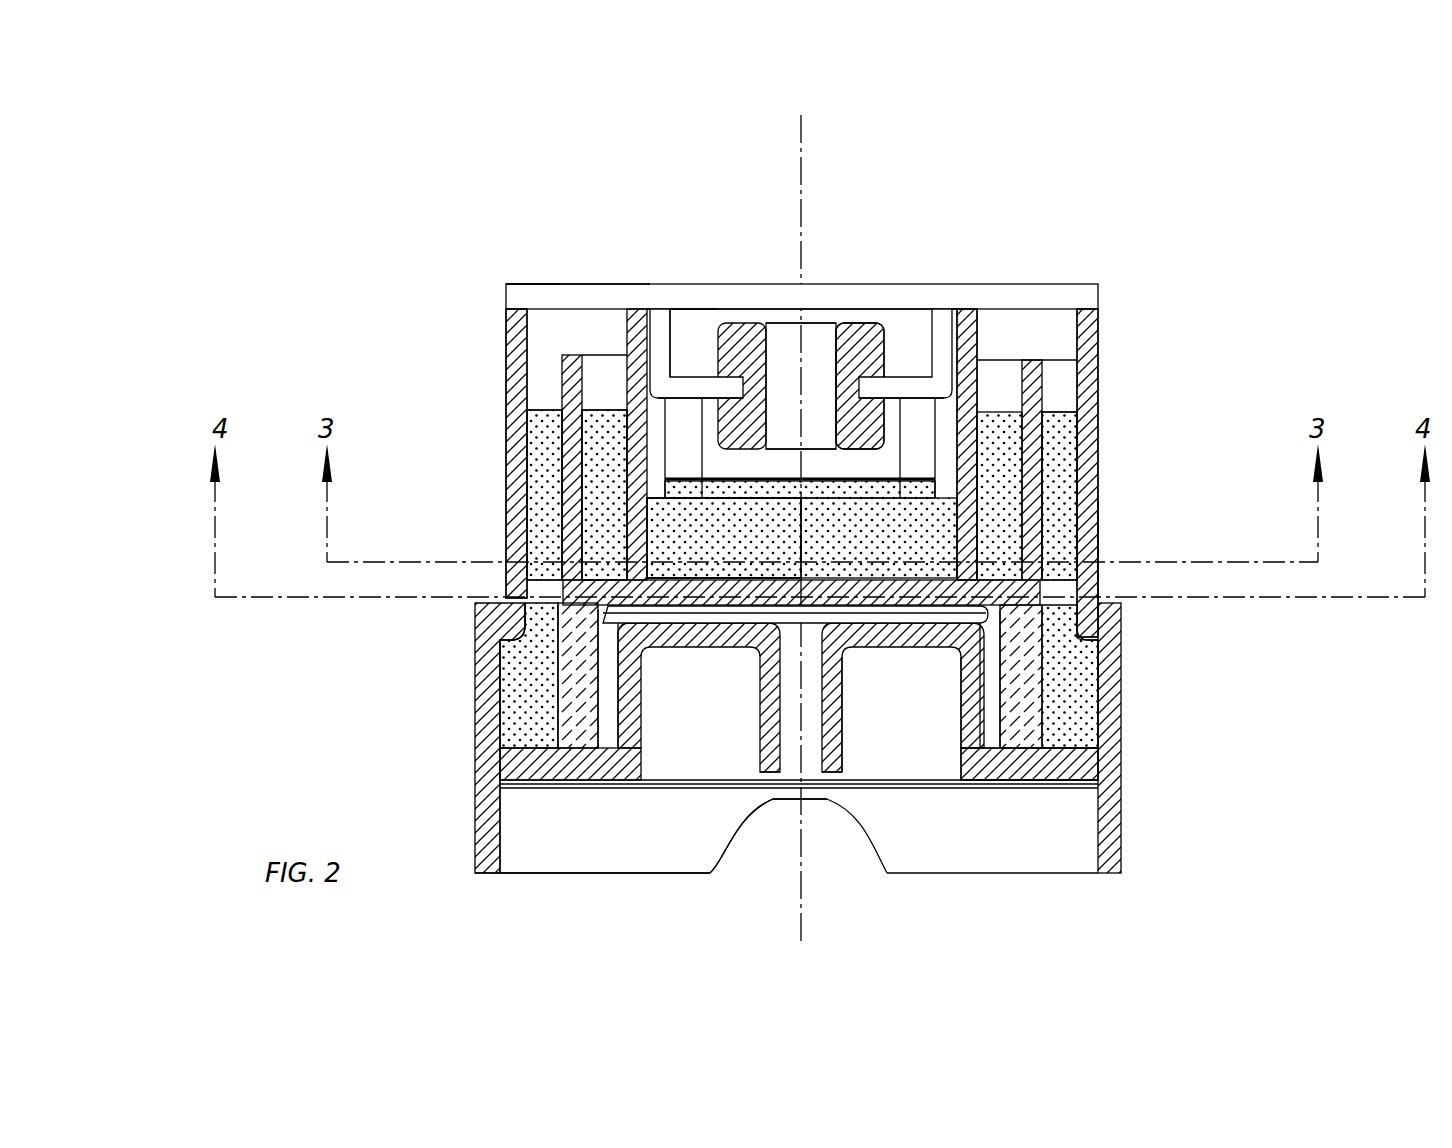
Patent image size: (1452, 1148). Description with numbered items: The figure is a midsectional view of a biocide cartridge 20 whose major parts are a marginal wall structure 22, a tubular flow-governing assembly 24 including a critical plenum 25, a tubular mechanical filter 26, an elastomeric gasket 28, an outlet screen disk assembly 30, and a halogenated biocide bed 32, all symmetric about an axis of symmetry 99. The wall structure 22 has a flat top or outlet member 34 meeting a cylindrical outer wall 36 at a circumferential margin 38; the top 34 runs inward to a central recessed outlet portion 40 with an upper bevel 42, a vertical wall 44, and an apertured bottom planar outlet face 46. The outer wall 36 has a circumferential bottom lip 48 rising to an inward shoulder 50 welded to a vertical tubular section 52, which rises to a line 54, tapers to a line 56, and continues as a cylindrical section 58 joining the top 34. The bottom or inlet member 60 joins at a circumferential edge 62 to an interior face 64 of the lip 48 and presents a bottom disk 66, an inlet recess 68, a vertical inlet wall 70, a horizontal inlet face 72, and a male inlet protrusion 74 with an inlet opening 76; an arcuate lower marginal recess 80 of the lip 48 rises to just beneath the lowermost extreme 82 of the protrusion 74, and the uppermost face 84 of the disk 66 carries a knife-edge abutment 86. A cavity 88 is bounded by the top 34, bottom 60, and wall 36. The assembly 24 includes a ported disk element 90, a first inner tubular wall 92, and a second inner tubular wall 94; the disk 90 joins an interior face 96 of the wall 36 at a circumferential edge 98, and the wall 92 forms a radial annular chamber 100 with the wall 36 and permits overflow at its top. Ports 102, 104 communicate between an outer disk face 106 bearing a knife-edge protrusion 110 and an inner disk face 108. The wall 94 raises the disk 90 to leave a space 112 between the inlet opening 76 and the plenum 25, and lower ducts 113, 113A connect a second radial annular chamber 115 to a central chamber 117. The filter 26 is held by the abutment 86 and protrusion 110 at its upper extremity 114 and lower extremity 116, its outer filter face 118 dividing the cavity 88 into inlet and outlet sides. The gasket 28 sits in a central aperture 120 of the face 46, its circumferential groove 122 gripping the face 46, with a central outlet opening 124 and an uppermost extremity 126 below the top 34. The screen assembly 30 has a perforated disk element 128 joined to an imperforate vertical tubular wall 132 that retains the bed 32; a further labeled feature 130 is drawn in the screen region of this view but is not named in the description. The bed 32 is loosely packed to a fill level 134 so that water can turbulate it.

The biocide cartridge 20 is at (1103, 285).
The marginal wall structure 22 is at (1100, 403).
The tubular flow-governing assembly 24 is at (970, 335).
The critical plenum 25 is at (628, 727).
The tubular mechanical filter 26 is at (1060, 718).
The elastomeric gasket 28 is at (866, 330).
The outlet screen disk assembly 30 is at (828, 478).
The halogenated biocide bed 32 is at (845, 541).
The top or outlet member 34 is at (556, 284).
The cylindrical outer wall 36 is at (1098, 365).
The circumferential margin 38 is at (503, 308).
The central recessed outlet portion 40 is at (703, 325).
The upper bevel 42 is at (662, 325).
The vertical wall 44 is at (678, 395).
The bottom planar outlet face 46 is at (697, 380).
The circumferential bottom lip 48 is at (1125, 820).
The inward shoulder 50 is at (1090, 608).
The vertical tubular section 52 is at (1040, 592).
The line 54 is at (1092, 550).
The line 56 is at (1098, 508).
The cylindrical section 58 is at (1084, 460).
The bottom or inlet member 60 is at (740, 735).
The circumferential edge 62 is at (515, 797).
The interior face 64 is at (505, 850).
The bottom disk 66 is at (1063, 782).
The inlet recess 68 is at (965, 772).
The vertical inlet wall 70 is at (963, 723).
The horizontal inlet face 72 is at (912, 641).
The male inlet protrusion 74 is at (840, 722).
The inlet opening 76 is at (840, 772).
The arcuate lower marginal recess 80 is at (727, 840).
The lowermost extreme 82 is at (773, 772).
The uppermost face 84 is at (1015, 745).
The knife-edge abutment 86 is at (1013, 750).
The cavity 88 is at (598, 327).
The ported disk element 90 is at (940, 583).
The first inner tubular wall 92 is at (1098, 337).
The second inner tubular wall 94 is at (985, 378).
The interior face 96 is at (520, 510).
The circumferential edge 98 is at (535, 575).
The axis of symmetry 99 is at (801, 877).
The radial annular chamber 100 is at (545, 400).
The port 102 is at (1085, 690).
The port 104 is at (527, 607).
The outer disk face 106 is at (540, 660).
The inner disk face 108 is at (640, 470).
The knife-edge protrusion 110 is at (1040, 712).
The space 112 is at (722, 612).
The duct 113 is at (952, 545).
The duct 113A is at (655, 570).
The upper extremity 114 is at (580, 683).
The second radial annular chamber 115 is at (560, 375).
The lower extremity 116 is at (558, 725).
The central chamber 117 is at (773, 520).
The outer filter face 118 is at (605, 693).
The central aperture 120 is at (892, 380).
The circumferential groove 122 is at (787, 388).
The central outlet opening 124 is at (830, 388).
The uppermost extremity 126 is at (717, 297).
The perforated disk element 128 is at (908, 330).
The bobbin wall 130 is at (675, 478).
The imperforate vertical tubular wall 132 is at (665, 437).
The fill level 134 is at (525, 352).